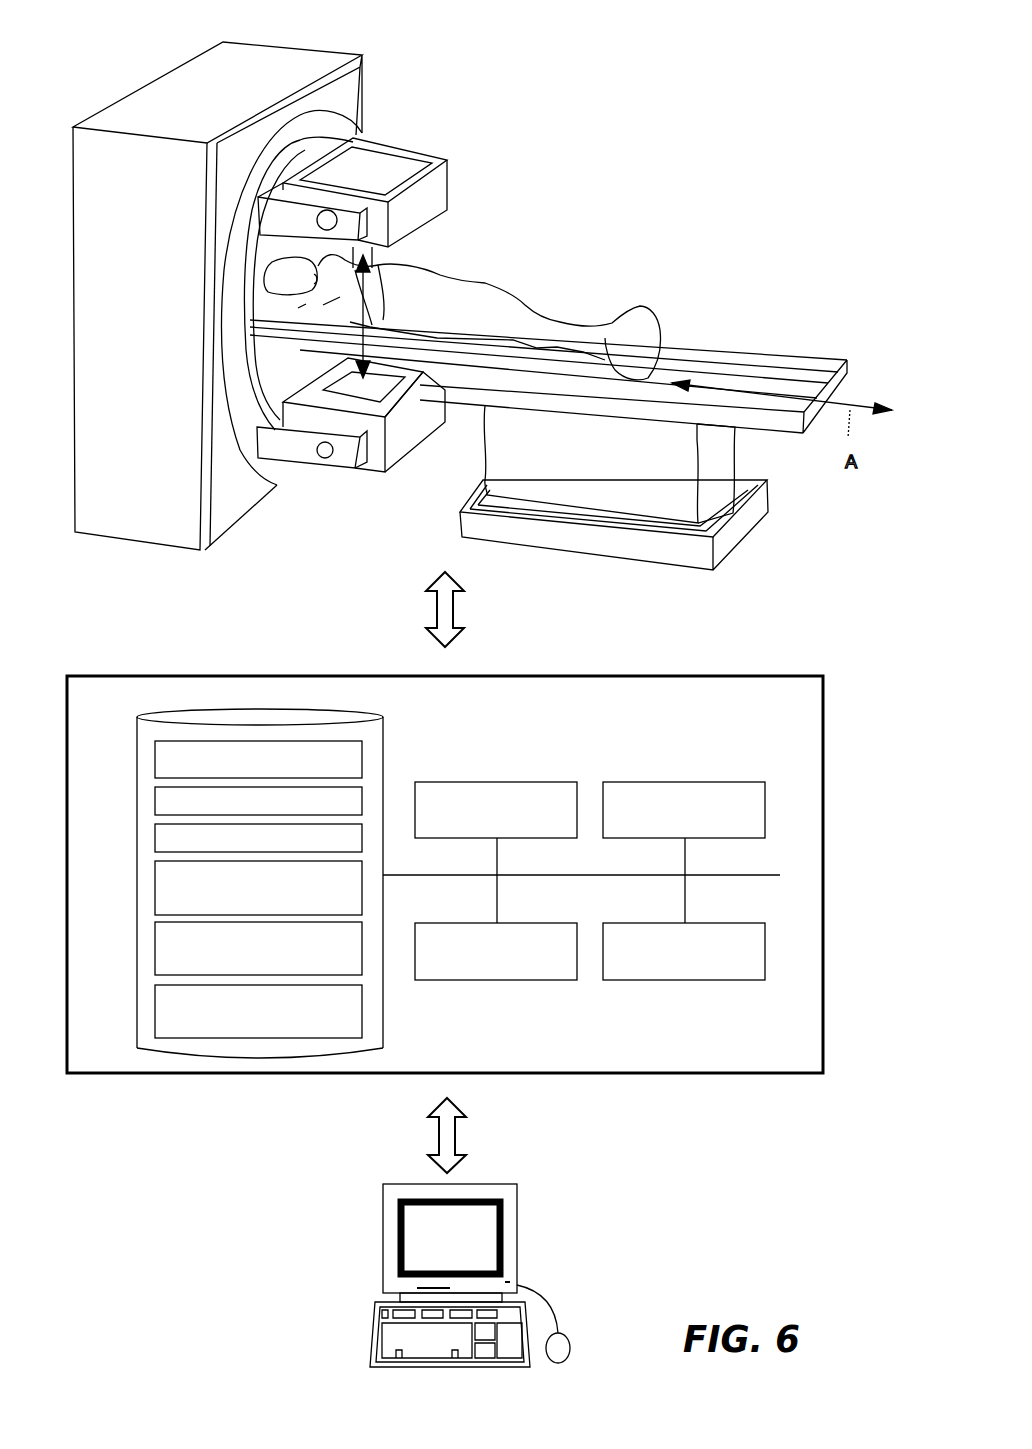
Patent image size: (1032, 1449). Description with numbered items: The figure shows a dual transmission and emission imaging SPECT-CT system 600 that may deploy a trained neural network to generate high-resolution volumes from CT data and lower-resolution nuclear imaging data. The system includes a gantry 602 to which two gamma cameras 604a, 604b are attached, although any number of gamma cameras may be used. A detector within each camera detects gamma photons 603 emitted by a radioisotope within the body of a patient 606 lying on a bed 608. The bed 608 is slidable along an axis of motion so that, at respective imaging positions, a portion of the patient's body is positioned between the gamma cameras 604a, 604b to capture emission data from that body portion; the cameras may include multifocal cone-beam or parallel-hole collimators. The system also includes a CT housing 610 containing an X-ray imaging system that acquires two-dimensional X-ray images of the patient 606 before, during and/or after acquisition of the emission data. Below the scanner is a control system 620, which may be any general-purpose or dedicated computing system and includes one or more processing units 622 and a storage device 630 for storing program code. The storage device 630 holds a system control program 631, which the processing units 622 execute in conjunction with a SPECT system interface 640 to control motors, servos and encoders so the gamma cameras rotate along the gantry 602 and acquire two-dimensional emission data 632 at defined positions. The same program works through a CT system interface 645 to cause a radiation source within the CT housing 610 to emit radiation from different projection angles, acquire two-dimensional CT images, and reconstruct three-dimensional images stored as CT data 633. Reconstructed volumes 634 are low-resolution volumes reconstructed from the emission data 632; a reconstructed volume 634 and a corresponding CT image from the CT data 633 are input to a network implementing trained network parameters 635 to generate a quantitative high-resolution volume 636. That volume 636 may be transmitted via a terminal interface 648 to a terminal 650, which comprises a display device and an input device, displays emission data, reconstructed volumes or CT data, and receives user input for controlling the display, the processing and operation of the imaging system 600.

The SPECT-CT system 600 is at (182, 25).
The gantry 602 is at (273, 474).
The gamma photons 603 is at (382, 266).
The gamma camera 604a is at (397, 447).
The gamma camera 604b is at (437, 190).
The patient 606 is at (562, 322).
The bed 608 is at (648, 337).
The CT housing 610 is at (310, 58).
The control system 620 is at (792, 712).
The processing units 622 is at (520, 923).
The storage device 630 is at (347, 718).
The system control program 631 is at (155, 762).
The emission data 632 is at (155, 805).
The CT data 633 is at (155, 847).
The reconstructed volumes 634 is at (155, 887).
The trained network parameters 635 is at (155, 955).
The quantitative high-resolution volume 636 is at (155, 1017).
The SPECT system interface 640 is at (507, 782).
The CT system interface 645 is at (695, 782).
The terminal interface 648 is at (702, 923).
The terminal 650 is at (565, 1236).